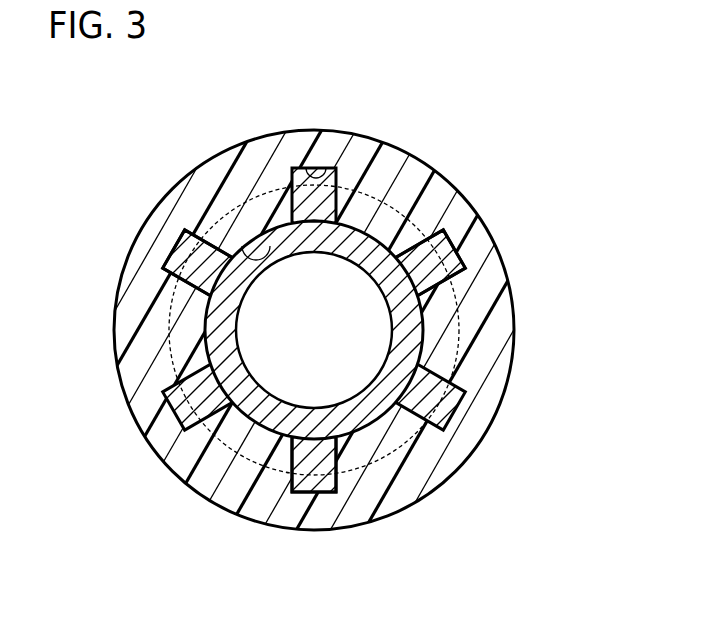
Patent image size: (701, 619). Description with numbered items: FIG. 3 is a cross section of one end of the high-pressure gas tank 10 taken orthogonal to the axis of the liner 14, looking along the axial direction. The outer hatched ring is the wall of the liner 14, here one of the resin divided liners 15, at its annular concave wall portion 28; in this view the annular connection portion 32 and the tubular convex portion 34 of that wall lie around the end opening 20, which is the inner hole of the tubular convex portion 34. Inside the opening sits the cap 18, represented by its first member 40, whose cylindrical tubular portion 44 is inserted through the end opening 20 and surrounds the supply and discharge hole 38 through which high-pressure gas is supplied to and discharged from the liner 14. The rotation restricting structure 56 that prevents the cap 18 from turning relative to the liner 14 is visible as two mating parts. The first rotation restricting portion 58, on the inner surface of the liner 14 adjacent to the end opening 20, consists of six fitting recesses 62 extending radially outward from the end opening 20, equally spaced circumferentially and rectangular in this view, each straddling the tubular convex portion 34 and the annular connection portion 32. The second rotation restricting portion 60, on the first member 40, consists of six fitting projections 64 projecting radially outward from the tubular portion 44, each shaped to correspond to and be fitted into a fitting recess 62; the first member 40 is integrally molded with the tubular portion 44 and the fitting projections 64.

The high-pressure gas tank 10 is at (120, 103).
The liner 14 is at (314, 308).
The divided liner 15 is at (400, 145).
The cap 18 is at (507, 263).
The end opening 20 is at (268, 248).
The annular concave wall portion 28 is at (437, 190).
The annular connection portion 32 is at (207, 480).
The tubular convex portion 34 is at (385, 460).
The supply and discharge hole 38 is at (285, 373).
The first member 40 is at (462, 259).
The tubular portion 44 is at (417, 331).
The rotation restricting structure 56 is at (323, 502).
The first rotation restricting portion 58 is at (321, 128).
The second rotation restricting portion 60 is at (128, 261).
The fitting recess 62 is at (303, 167).
The fitting projection 64 is at (180, 260).